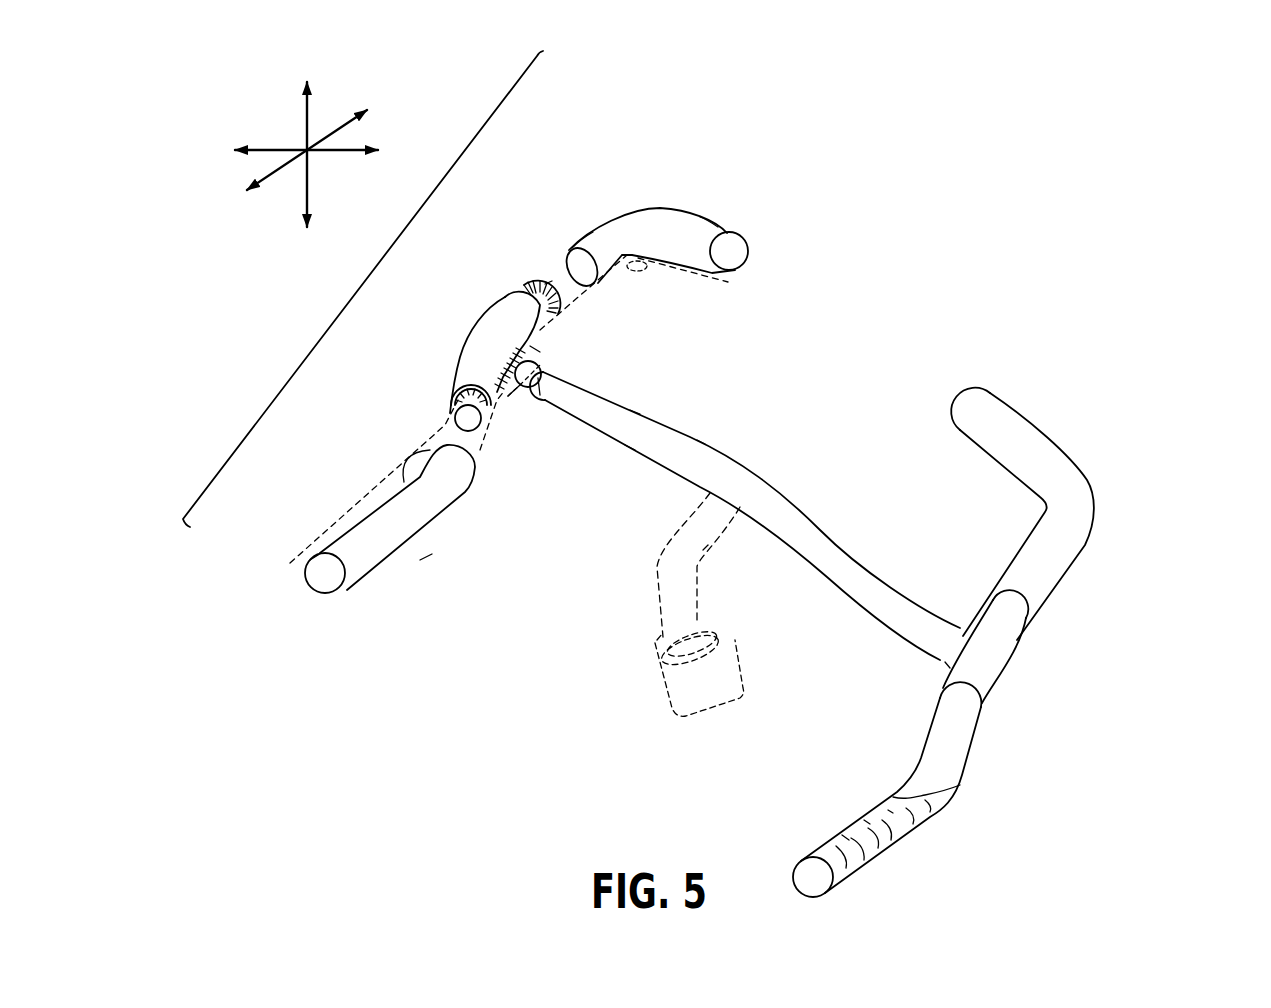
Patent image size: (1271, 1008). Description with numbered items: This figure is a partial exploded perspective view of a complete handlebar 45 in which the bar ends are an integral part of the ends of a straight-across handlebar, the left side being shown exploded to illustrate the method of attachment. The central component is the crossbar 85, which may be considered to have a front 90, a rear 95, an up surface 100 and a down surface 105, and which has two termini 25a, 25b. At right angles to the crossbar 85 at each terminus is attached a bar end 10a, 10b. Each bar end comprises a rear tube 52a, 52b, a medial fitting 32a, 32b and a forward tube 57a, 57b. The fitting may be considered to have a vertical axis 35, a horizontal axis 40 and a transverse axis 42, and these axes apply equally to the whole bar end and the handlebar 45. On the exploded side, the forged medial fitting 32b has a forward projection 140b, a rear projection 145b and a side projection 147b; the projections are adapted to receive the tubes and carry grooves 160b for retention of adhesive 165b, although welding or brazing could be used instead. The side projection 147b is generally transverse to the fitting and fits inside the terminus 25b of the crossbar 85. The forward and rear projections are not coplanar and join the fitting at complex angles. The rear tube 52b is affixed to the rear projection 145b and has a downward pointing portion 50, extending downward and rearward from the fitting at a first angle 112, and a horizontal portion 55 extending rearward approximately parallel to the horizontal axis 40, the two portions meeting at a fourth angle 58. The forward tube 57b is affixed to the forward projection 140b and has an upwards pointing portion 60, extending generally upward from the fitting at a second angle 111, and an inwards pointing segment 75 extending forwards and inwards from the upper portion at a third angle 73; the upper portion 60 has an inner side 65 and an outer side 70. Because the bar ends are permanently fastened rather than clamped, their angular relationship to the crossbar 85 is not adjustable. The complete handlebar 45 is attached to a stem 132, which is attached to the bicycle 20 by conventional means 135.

The bar end 10a is at (1122, 623).
The bar end 10b is at (567, 141).
The bicycle 20 is at (663, 748).
The terminus 25a is at (938, 660).
The terminus 25b is at (547, 395).
The medial fitting 32a is at (1041, 674).
The medial fitting 32b is at (484, 315).
The vertical axis 35 is at (312, 108).
The horizontal axis 40 is at (275, 172).
The transverse axis 42 is at (350, 146).
The handlebar 45 is at (1019, 222).
The downward pointing portion 50 is at (450, 484).
The rear tube 52a is at (1044, 798).
The rear tube 52b is at (427, 576).
The horizontal portion 55 is at (357, 568).
The forward tube 57a is at (1083, 450).
The forward tube 57b is at (692, 141).
The fourth angle 58 is at (411, 468).
The upwards pointing portion 60 is at (608, 238).
The inner side 65 is at (619, 272).
The outer side 70 is at (590, 229).
The third angle 73 is at (653, 270).
The inwards pointing segment 75 is at (685, 220).
The crossbar 85 is at (812, 541).
The front 90 is at (712, 450).
The rear 95 is at (630, 458).
The up surface 100 is at (647, 437).
The down surface 105 is at (693, 483).
The second angle 111 is at (536, 344).
The first angle 112 is at (511, 398).
The stem 132 is at (703, 550).
The conventional means 135 is at (742, 670).
The forward projection 140b is at (530, 284).
The rear projection 145b is at (454, 402).
The side projection 147b is at (543, 360).
The grooves 160b is at (551, 280).
The adhesive 165b is at (502, 398).